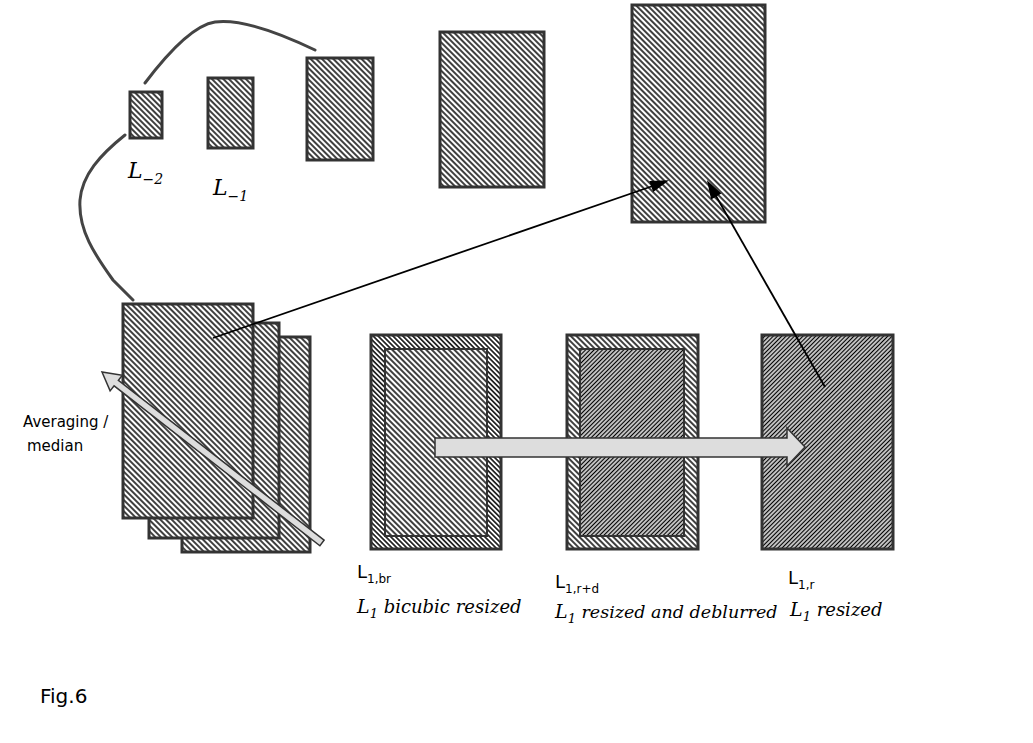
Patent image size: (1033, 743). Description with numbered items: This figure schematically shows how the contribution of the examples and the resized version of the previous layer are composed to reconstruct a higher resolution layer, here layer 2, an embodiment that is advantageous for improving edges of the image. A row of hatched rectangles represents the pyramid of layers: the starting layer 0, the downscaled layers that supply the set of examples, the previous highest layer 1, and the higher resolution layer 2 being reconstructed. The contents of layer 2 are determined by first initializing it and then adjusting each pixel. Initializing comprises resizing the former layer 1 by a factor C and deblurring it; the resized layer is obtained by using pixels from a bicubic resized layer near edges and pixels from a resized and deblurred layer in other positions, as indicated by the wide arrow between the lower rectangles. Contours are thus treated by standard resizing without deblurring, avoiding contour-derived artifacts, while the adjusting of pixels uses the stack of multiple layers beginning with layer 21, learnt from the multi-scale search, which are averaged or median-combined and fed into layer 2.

The base resolution image L0 0 is at (340, 137).
The previous highest layer 1 is at (492, 128).
The higher resolution layer 2 is at (698, 141).
The multi-scale search layer 21 is at (216, 453).